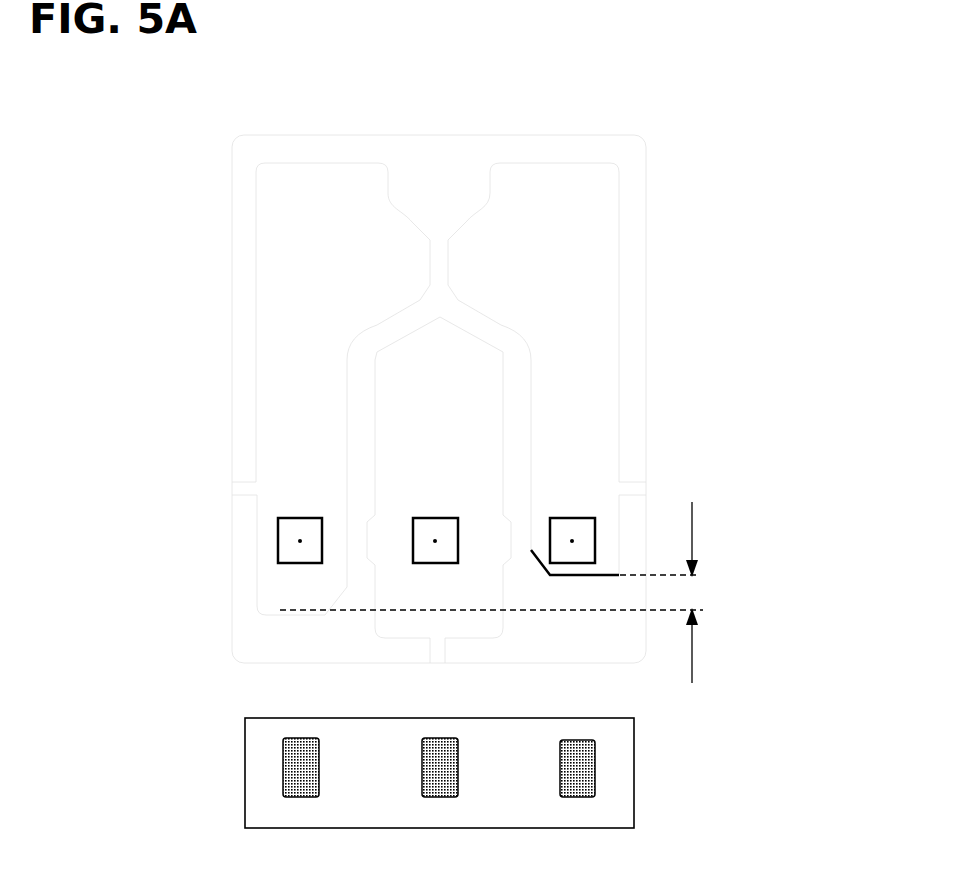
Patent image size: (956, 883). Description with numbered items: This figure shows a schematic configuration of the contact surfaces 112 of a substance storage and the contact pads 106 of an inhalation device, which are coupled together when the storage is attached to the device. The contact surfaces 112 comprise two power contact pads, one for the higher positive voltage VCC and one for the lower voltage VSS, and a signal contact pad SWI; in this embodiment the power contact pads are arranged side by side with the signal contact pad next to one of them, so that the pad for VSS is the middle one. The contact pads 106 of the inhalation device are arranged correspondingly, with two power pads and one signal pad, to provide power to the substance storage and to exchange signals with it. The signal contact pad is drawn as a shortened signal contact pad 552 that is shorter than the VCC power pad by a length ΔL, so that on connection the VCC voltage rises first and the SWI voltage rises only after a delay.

The substance storage interface 112 is at (532, 345).
The shortened signal contact pad 552 is at (573, 369).
The electronic interface 106 is at (490, 784).